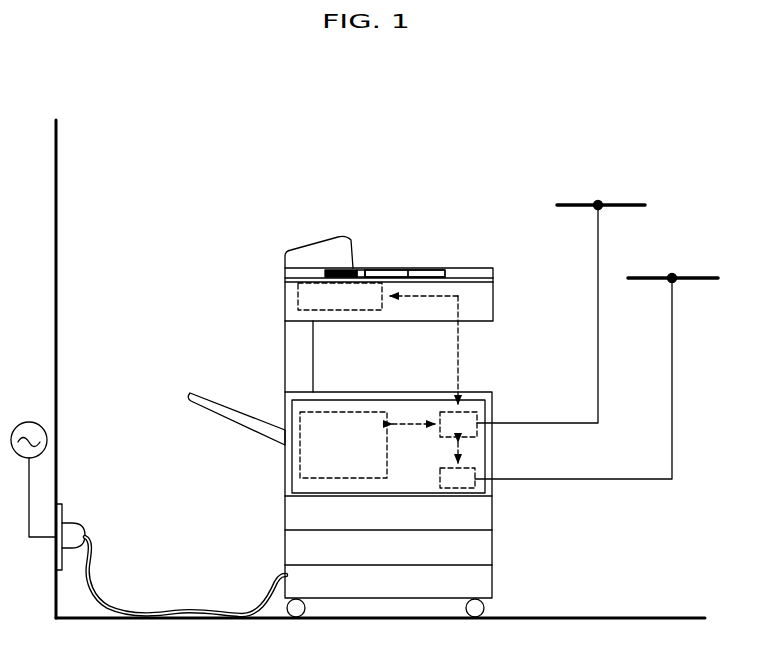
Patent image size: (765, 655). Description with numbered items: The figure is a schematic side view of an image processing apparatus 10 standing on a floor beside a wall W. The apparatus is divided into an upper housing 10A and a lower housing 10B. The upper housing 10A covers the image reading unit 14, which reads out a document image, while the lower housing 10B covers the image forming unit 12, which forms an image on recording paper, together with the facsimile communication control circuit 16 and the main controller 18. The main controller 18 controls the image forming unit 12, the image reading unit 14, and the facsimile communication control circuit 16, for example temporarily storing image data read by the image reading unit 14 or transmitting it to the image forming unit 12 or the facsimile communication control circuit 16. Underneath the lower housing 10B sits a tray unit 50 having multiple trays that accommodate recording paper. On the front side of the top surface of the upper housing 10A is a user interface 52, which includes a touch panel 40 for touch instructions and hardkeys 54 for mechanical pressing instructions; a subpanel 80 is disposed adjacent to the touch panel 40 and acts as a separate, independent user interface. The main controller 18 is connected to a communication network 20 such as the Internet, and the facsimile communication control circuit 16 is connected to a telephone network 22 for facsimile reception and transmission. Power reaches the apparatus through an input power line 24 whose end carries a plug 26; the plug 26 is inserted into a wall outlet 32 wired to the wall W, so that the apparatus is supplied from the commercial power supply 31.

The image processing apparatus 10 is at (294, 236).
The upper housing 10A is at (493, 300).
The lower housing 10B is at (285, 455).
The image forming unit 12 is at (300, 467).
The image reading unit 14 is at (298, 286).
The facsimile communication control circuit 16 is at (473, 468).
The main controller 18 is at (482, 413).
The communication network 20 is at (590, 203).
The telephone network 22 is at (688, 277).
The input power line 24 is at (105, 593).
The plug 26 is at (82, 530).
The commercial power supply 31 is at (31, 422).
The wall outlet 32 is at (62, 511).
The touch panel 40 is at (385, 275).
The tray unit 50 is at (504, 542).
The user interface 52 is at (446, 227).
The hardkeys 54 is at (420, 275).
The subpanel 80 is at (358, 269).
The wall W is at (57, 198).